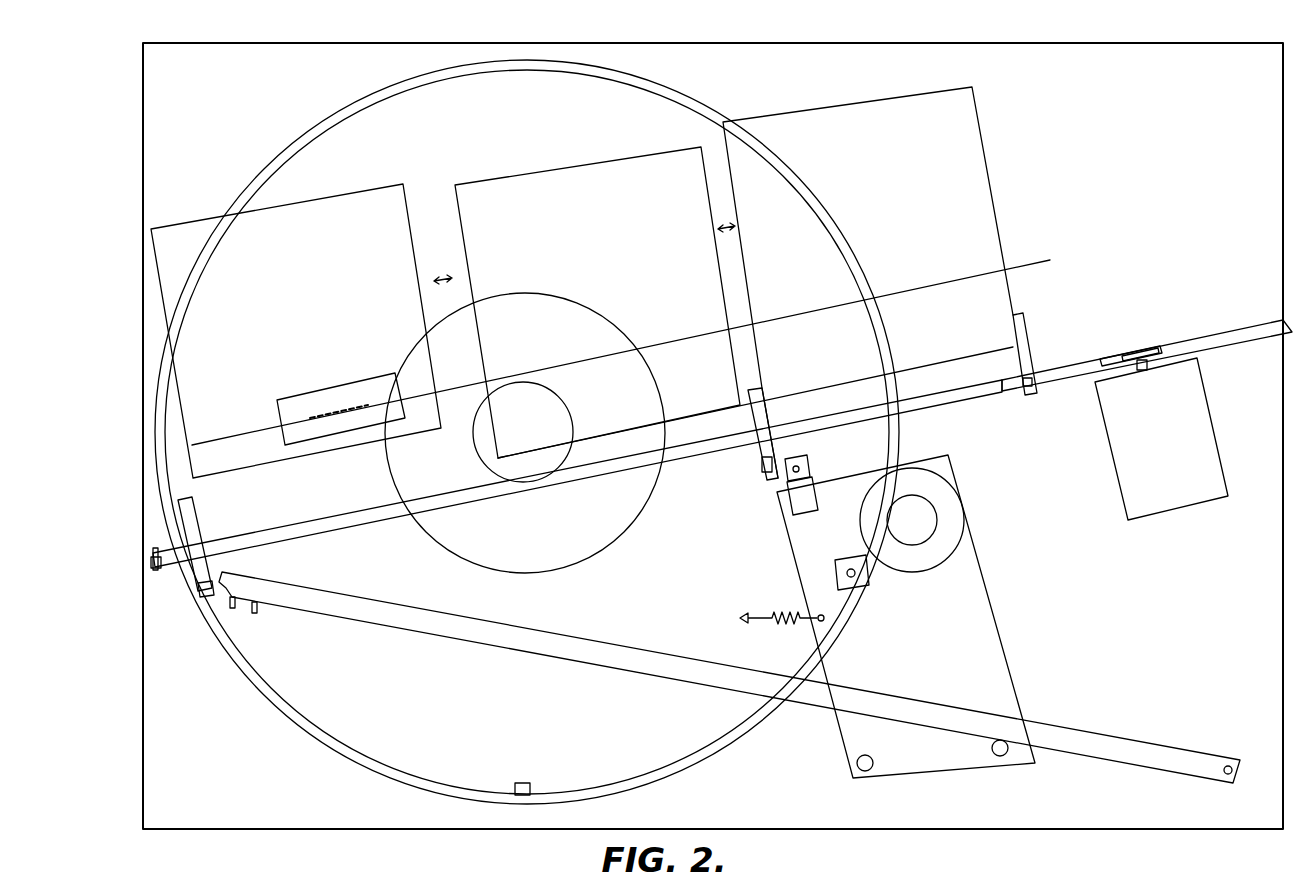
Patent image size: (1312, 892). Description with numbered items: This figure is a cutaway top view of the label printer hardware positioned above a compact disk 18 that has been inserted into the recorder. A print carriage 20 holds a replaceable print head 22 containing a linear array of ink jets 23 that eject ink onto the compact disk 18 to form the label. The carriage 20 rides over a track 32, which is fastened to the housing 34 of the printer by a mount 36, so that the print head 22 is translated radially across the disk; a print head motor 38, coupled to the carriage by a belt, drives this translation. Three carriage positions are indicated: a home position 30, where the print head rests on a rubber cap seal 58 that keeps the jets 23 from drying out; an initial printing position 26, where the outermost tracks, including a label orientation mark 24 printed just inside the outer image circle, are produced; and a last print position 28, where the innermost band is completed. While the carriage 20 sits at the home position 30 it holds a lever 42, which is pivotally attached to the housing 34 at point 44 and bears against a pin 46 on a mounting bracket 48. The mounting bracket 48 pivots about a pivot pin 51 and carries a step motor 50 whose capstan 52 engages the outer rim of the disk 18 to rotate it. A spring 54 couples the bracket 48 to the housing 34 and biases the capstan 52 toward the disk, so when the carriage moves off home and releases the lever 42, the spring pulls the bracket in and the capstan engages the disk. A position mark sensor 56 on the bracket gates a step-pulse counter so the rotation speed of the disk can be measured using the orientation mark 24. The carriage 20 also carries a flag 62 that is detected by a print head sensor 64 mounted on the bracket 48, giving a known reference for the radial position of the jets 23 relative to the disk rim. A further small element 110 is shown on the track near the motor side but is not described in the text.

The disc 18 is at (686, 96).
The bracket 20 is at (180, 505).
The cassette 22 is at (608, 265).
The dashed sensor line 23 is at (338, 402).
The marker 24 is at (532, 787).
The module 26 is at (978, 166).
The module 28 is at (563, 182).
The module 30 is at (325, 207).
The rod 32 is at (1200, 342).
The base plate 34 is at (142, 603).
The fastener 36 is at (159, 575).
The block 38 is at (1120, 432).
The arm 42 is at (330, 604).
The pivot pin 44 is at (1228, 765).
The pin 46 is at (1004, 755).
The housing 48 is at (980, 633).
The hub 50 is at (950, 515).
The pin 51 is at (870, 770).
The shaft 52 is at (917, 538).
The spring 54 is at (758, 614).
The stop 56 is at (858, 582).
The sensor 58 is at (284, 398).
The sensor 62 is at (212, 598).
The sensor 64 is at (811, 466).
The plate 110 is at (1108, 358).